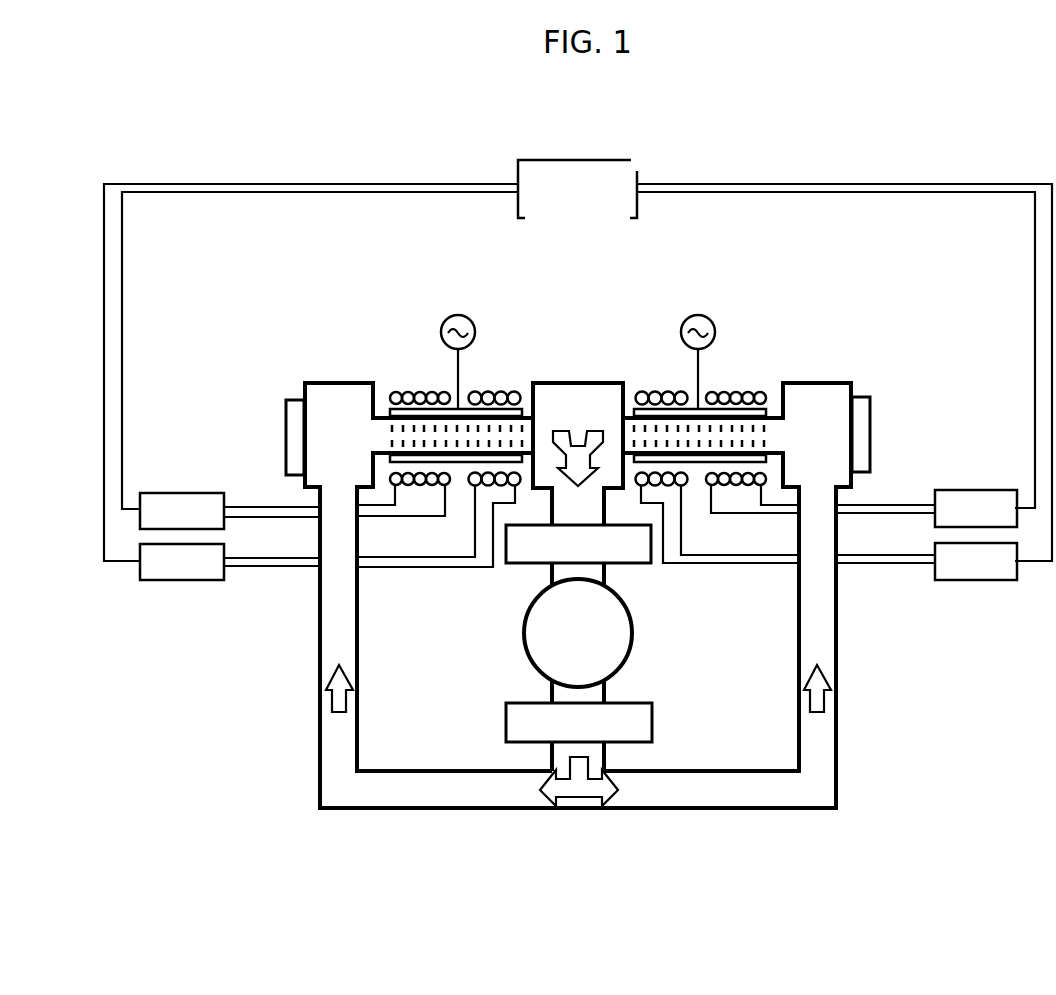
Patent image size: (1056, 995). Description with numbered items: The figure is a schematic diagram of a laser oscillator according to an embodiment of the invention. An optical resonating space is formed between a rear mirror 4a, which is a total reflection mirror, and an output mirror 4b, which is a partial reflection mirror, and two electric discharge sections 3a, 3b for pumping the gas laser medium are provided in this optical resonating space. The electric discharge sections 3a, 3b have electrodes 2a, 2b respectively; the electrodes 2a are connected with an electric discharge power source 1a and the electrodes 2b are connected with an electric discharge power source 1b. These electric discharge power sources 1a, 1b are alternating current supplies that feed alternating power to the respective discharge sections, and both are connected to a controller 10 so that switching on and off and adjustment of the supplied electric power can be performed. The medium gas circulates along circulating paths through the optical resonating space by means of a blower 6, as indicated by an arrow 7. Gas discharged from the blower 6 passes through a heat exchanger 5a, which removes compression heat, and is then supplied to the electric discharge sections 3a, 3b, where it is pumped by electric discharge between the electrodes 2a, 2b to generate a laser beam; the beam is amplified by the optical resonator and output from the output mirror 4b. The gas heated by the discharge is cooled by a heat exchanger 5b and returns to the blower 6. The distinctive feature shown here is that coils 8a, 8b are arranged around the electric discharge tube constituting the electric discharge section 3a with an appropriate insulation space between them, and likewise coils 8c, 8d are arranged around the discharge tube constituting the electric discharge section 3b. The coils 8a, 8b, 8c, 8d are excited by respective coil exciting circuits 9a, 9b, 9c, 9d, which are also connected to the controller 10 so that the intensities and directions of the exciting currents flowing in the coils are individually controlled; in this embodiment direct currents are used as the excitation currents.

The controller 10 is at (559, 158).
The electric discharge power source 1a is at (457, 314).
The electric discharge power source 1b is at (697, 314).
The electrodes 2a is at (456, 465).
The electrodes 2b is at (699, 465).
The electric discharge section 3a is at (388, 398).
The electric discharge section 3b is at (768, 398).
The rear mirror 4a is at (292, 398).
The output mirror 4b is at (863, 395).
The heat exchanger 5a is at (653, 722).
The heat exchanger 5b is at (512, 565).
The blower 6 is at (633, 633).
The arrow 7 is at (325, 691).
The coil 8a is at (404, 486).
The coil 8b is at (506, 390).
The coil 8c is at (649, 390).
The coil 8d is at (745, 390).
The coil exciting circuit 9a is at (166, 493).
The coil exciting circuit 9b is at (164, 580).
The coil exciting circuit 9c is at (950, 580).
The coil exciting circuit 9d is at (952, 490).